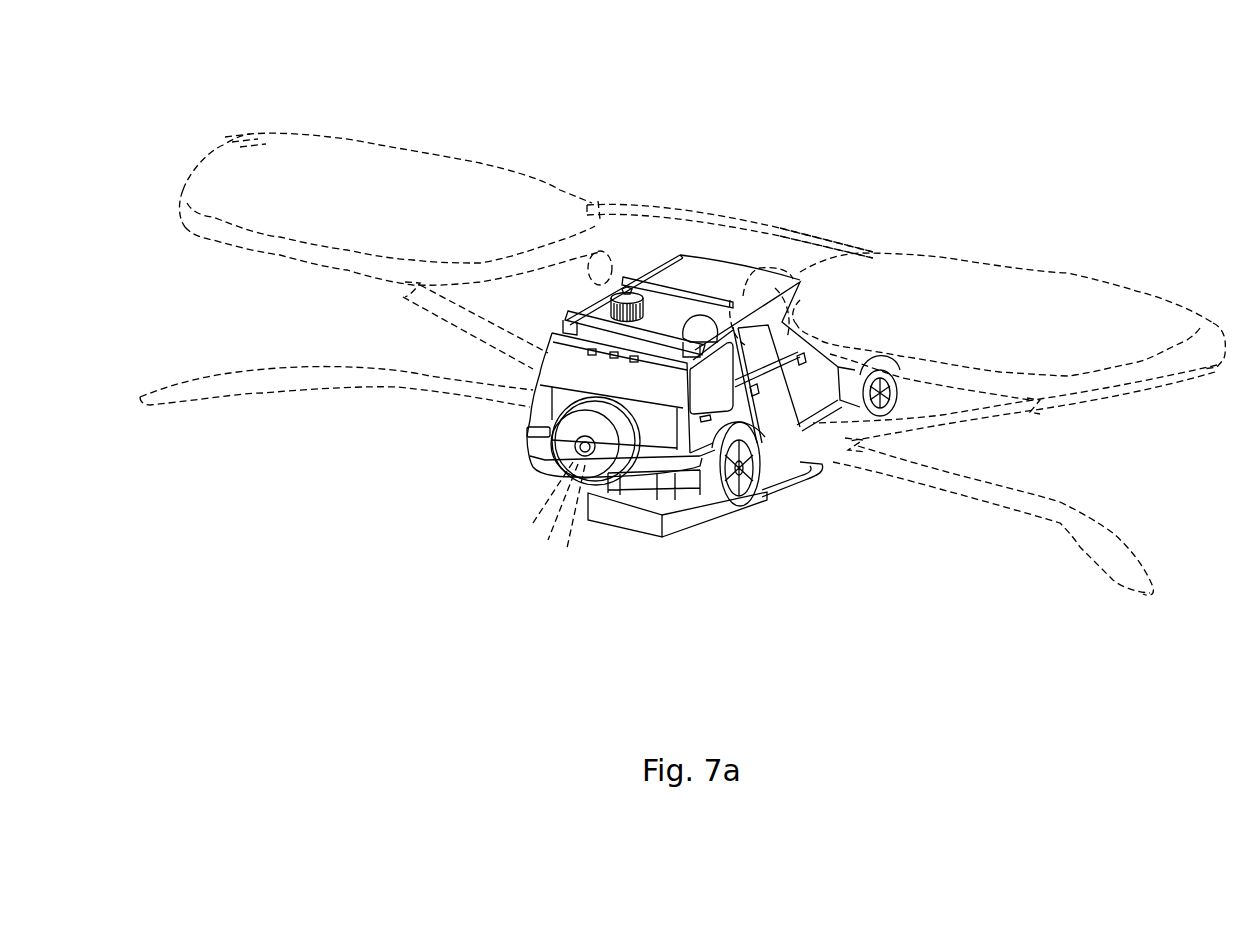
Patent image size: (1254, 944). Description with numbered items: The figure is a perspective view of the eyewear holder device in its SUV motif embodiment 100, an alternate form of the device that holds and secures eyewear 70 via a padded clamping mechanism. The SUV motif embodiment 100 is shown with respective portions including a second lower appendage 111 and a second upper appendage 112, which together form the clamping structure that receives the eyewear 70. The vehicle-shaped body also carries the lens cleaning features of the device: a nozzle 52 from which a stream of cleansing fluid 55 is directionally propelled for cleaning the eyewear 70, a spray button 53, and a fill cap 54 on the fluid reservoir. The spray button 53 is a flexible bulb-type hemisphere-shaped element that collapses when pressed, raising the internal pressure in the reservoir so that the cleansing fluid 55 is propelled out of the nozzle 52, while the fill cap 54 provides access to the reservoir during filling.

The SUV motif embodiment 100 is at (355, 550).
The eyewear 70 is at (380, 141).
The fill cap 54 is at (624, 288).
The spray button 53 is at (697, 327).
The second upper appendage 112 is at (752, 277).
The nozzle 52 is at (590, 458).
The cleansing fluid 55 is at (544, 522).
The second lower appendage 111 is at (765, 505).